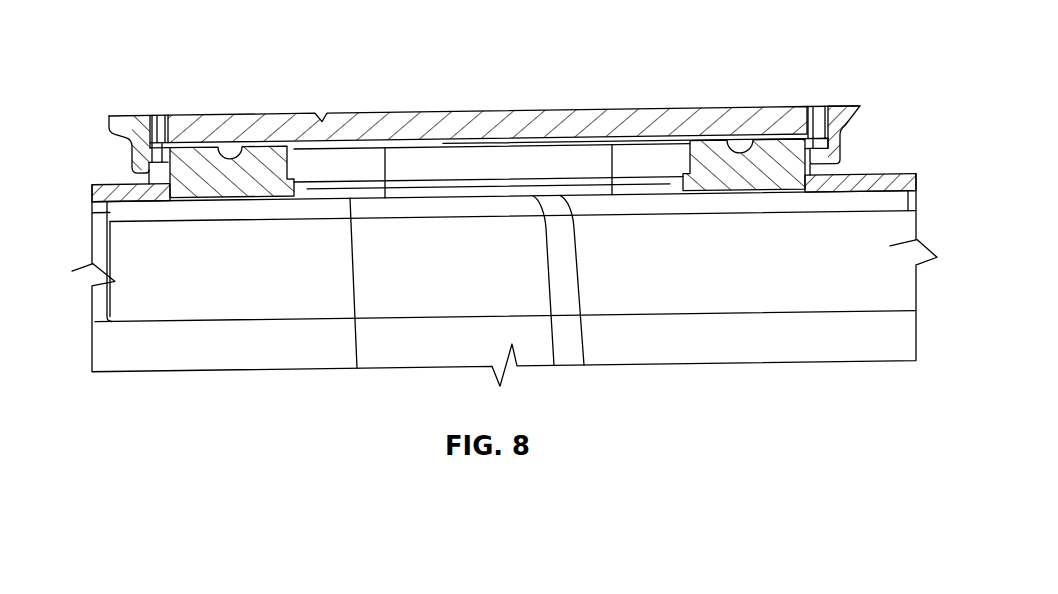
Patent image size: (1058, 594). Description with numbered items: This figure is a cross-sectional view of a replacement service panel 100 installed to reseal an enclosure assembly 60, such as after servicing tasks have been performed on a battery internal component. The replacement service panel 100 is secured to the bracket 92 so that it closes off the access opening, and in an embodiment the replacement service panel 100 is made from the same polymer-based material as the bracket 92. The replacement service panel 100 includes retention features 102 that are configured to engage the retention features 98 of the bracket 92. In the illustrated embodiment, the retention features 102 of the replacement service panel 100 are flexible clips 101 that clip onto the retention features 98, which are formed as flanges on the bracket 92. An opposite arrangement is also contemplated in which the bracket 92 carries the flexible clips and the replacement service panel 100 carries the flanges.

The enclosure assembly 60 is at (886, 186).
The bracket 92 is at (650, 171).
The retention features 98 is at (148, 124).
The replacement service panel 100 is at (548, 125).
The flexible clips 101 is at (138, 170).
The retention features 102 is at (139, 127).